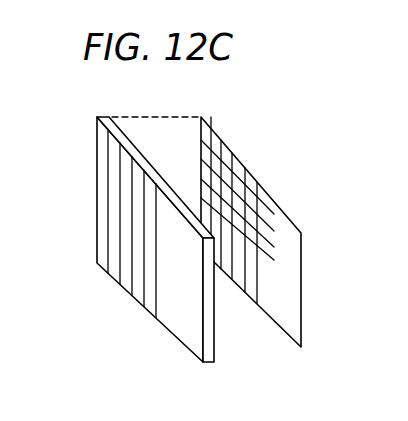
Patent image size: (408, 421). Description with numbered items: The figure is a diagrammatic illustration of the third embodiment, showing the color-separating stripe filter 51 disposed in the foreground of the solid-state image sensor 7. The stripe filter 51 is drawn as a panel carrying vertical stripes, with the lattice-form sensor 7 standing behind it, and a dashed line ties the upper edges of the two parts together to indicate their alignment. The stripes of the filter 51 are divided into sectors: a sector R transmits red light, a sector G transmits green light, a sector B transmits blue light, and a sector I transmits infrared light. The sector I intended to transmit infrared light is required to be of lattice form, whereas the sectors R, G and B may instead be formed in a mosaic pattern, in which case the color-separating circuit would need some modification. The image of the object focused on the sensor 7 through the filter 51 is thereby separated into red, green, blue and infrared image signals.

The color-separating stripe filter 51 is at (128, 223).
The solid-state image sensor 7 is at (213, 123).
The sector transmitting red light R is at (107, 128).
The sector transmitting green light G is at (117, 132).
The sector transmitting blue light B is at (123, 290).
The sector transmitting infrared light I is at (135, 298).